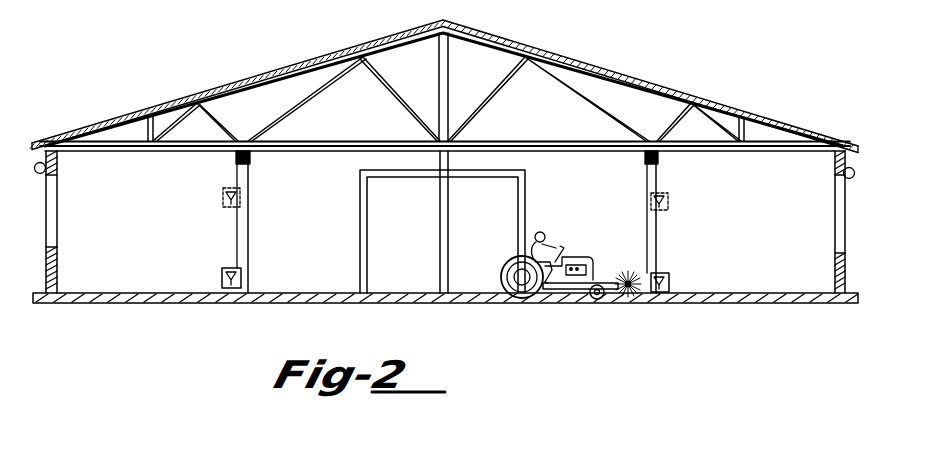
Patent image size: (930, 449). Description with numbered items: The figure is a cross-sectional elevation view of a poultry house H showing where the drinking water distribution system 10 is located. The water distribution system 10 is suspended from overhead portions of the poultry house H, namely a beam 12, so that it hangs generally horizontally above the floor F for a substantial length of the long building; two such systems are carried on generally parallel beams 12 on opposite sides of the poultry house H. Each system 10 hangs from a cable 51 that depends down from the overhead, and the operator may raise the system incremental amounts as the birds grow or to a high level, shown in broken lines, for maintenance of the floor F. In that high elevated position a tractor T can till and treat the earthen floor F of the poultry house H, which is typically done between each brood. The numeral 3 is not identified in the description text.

The poultry house H is at (565, 52).
The beam 12 is at (244, 141).
The cable 51 is at (236, 236).
The water distribution system 10 is at (214, 177).
The sensing device arrangement 3 is at (203, 209).
The tractor T is at (580, 252).
The floor F is at (775, 297).